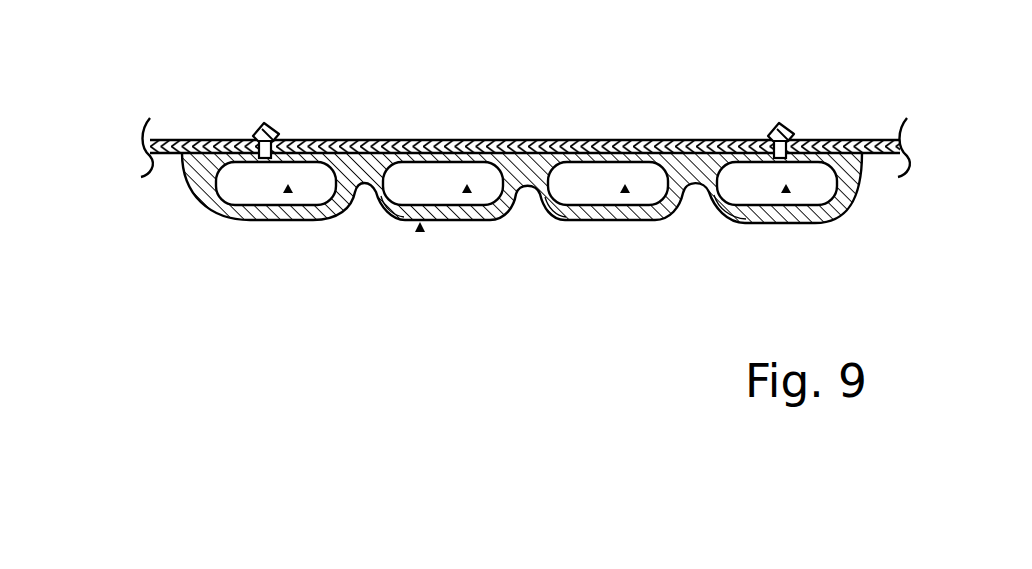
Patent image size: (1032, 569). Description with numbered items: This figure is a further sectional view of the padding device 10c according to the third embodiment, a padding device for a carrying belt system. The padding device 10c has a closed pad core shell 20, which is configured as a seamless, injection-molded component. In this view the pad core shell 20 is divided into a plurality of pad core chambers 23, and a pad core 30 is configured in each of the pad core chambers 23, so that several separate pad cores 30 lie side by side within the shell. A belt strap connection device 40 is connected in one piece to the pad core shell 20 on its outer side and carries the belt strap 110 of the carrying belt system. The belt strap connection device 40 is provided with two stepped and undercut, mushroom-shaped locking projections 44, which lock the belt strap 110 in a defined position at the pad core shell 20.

The padding device 10c is at (134, 57).
The pad core shell 20 is at (420, 232).
The pad core chambers 23 is at (289, 196).
The pad core 30 is at (325, 175).
The belt strap connection device 40 is at (802, 100).
The locking projections 44 is at (261, 122).
The belt strap 110 is at (627, 140).